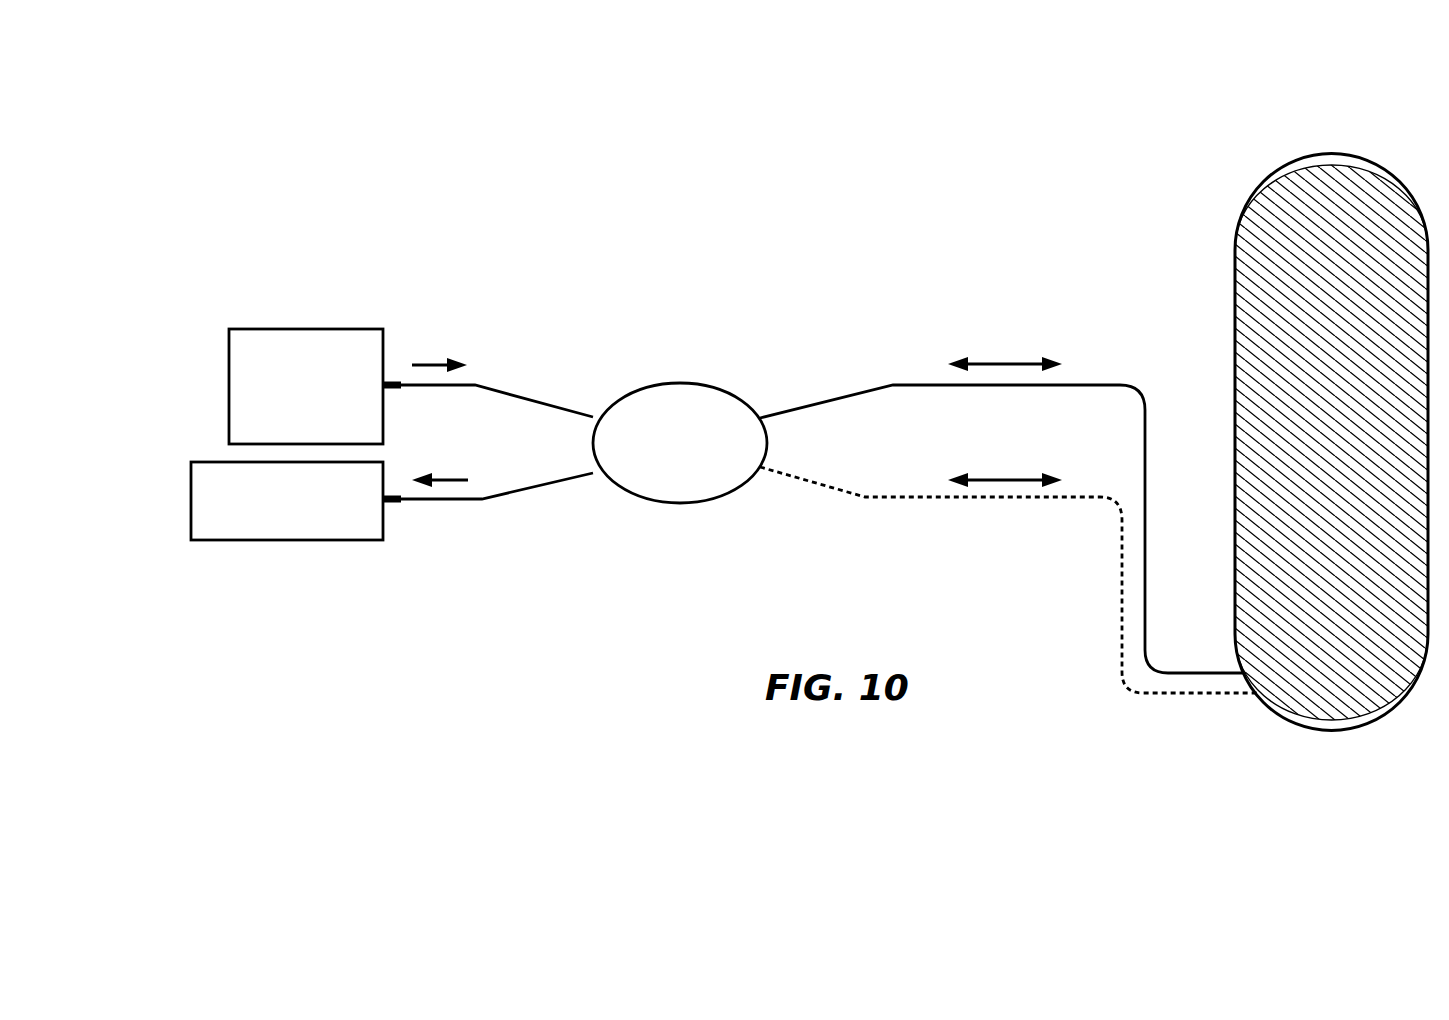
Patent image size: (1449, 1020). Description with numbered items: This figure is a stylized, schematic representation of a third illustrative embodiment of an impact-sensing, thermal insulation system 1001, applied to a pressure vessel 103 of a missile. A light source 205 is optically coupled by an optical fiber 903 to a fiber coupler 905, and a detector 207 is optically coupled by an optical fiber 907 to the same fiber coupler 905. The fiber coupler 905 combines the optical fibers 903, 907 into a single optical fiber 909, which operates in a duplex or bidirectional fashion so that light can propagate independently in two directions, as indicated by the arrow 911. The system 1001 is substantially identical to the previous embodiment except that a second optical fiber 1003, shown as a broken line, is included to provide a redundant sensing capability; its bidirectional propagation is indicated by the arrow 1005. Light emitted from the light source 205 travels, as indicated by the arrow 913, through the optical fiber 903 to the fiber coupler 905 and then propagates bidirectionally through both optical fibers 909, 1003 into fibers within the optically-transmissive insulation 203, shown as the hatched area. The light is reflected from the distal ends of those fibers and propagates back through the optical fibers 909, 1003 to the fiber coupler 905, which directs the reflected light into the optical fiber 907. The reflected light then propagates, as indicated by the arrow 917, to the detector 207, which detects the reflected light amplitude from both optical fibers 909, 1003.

The pressure vessel 103 is at (1290, 162).
The optically-transmissive insulation 203 is at (1260, 233).
The light source 205 is at (323, 328).
The detector 207 is at (191, 490).
The optical fiber 903 is at (510, 392).
The fiber coupler 905 is at (635, 493).
The optical fiber 907 is at (447, 500).
The optical fiber 909 is at (888, 385).
The arrow 911 is at (1007, 363).
The arrow 913 is at (427, 363).
The arrow 917 is at (447, 480).
The impact-sensing, thermal insulation system 1001 is at (918, 320).
The second optical fiber 1003 is at (865, 497).
The arrow 1005 is at (1003, 478).